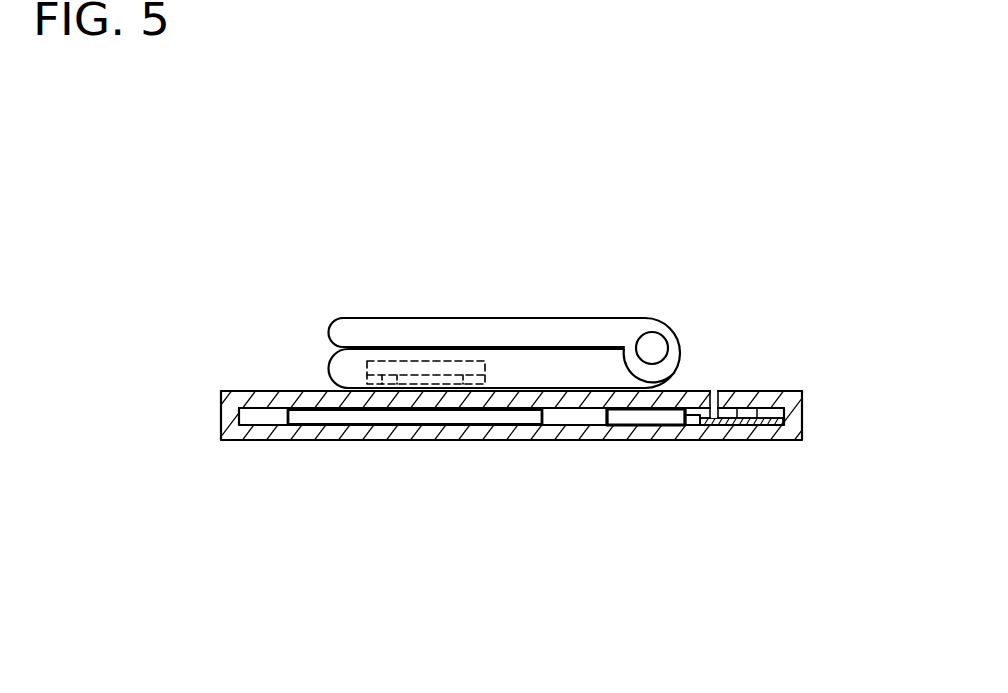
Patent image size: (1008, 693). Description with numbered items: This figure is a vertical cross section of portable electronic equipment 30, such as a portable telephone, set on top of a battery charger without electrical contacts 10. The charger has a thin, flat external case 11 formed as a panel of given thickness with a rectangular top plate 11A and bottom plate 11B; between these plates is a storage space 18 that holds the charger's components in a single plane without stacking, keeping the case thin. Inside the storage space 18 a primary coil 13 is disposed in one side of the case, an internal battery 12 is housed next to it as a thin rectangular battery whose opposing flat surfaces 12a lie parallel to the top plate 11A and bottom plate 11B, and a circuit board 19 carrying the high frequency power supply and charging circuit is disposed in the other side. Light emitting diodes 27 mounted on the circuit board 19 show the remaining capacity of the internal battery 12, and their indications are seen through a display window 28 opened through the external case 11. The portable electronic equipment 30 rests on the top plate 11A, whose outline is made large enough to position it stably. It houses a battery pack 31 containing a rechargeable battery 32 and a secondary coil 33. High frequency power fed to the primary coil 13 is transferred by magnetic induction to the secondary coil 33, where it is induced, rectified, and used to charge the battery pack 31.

The battery charger without electrical contacts 10 is at (262, 355).
The external case 11 is at (608, 530).
The top plate 11A is at (573, 400).
The bottom plate 11B is at (522, 435).
The internal battery 12 is at (640, 417).
The opposing flat surfaces 12a is at (628, 405).
The primary coil 13 is at (362, 415).
The storage space 18 is at (268, 412).
The circuit board 19 is at (735, 426).
The light emitting diodes 27 is at (715, 395).
The display window 28 is at (710, 395).
The portable electronic equipment 30 is at (492, 283).
The battery pack 31 is at (490, 365).
The rechargeable battery 32 is at (425, 363).
The secondary coil 33 is at (395, 382).